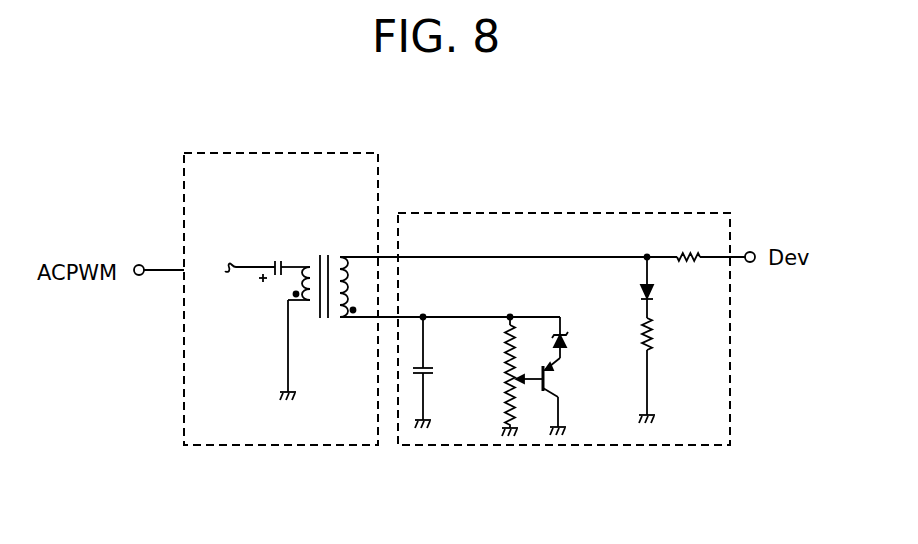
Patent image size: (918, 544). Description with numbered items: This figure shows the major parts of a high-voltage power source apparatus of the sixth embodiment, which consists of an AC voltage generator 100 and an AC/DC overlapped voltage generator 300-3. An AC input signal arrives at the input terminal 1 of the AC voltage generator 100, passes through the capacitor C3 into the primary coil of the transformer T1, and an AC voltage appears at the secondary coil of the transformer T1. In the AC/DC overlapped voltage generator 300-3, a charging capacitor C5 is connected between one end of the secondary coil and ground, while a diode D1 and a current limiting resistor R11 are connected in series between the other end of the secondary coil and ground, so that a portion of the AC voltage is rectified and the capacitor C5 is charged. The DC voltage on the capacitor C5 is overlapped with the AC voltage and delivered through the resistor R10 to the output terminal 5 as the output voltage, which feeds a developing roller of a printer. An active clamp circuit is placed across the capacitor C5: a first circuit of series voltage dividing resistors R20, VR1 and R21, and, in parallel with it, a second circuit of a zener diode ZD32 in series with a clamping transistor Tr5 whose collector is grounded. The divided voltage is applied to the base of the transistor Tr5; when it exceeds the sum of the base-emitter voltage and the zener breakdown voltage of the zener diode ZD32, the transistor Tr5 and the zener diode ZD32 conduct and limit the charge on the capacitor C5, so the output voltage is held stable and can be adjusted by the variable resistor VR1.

The ACPWM input terminal 1 is at (139, 265).
The output terminal 5 is at (751, 252).
The AC voltage generator 100 is at (379, 172).
The AC/DC overlapped voltage generator 300-3 is at (634, 212).
The capacitor C3 is at (267, 258).
The transformer T1 is at (318, 314).
The charging capacitor C5 is at (438, 372).
The voltage dividing resistor R20 is at (490, 338).
The variable resistor VR1 is at (504, 376).
The voltage dividing resistor R21 is at (491, 413).
The zener diode ZD32 is at (591, 337).
The clamping transistor Tr5 is at (570, 396).
The resistor R10 is at (711, 245).
The diode D1 is at (669, 287).
The current limiting resistor R11 is at (674, 370).